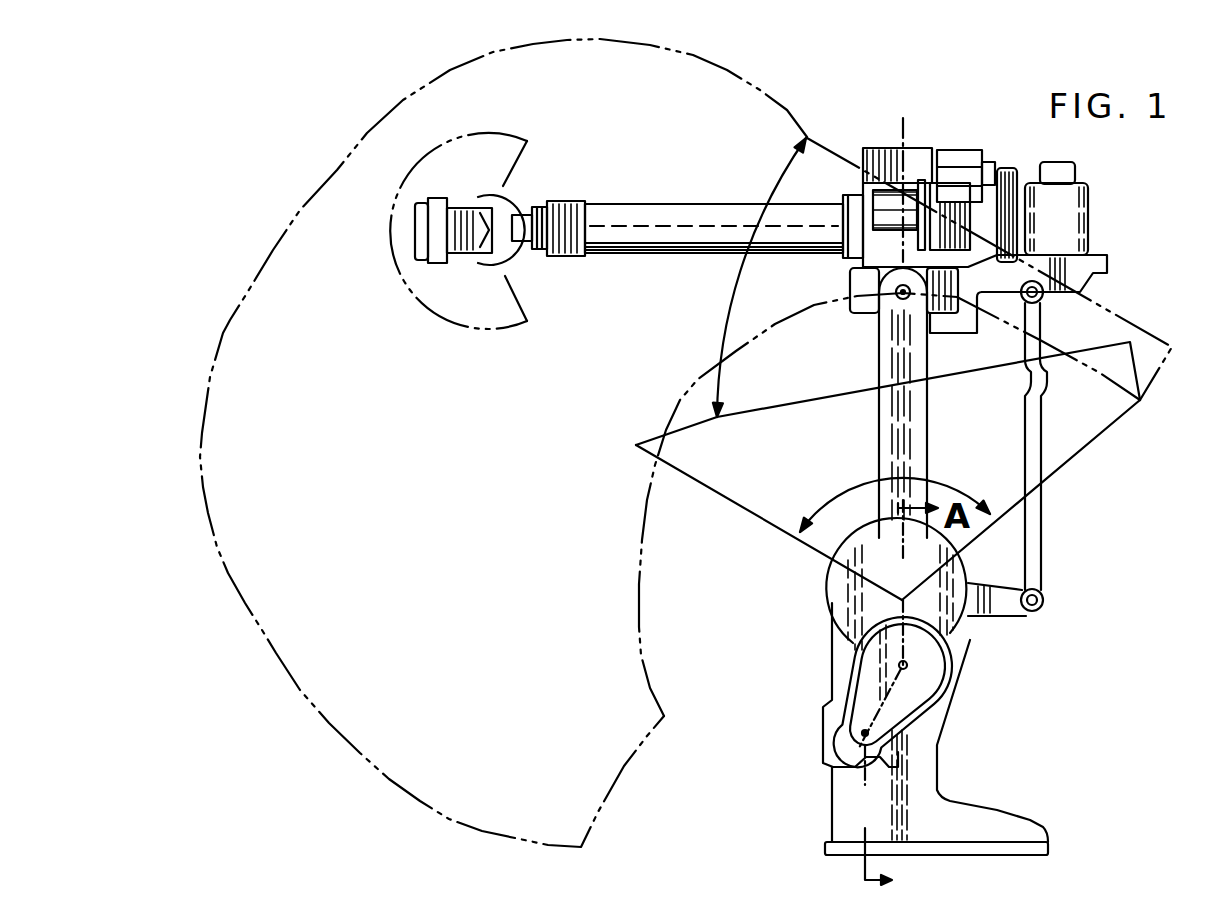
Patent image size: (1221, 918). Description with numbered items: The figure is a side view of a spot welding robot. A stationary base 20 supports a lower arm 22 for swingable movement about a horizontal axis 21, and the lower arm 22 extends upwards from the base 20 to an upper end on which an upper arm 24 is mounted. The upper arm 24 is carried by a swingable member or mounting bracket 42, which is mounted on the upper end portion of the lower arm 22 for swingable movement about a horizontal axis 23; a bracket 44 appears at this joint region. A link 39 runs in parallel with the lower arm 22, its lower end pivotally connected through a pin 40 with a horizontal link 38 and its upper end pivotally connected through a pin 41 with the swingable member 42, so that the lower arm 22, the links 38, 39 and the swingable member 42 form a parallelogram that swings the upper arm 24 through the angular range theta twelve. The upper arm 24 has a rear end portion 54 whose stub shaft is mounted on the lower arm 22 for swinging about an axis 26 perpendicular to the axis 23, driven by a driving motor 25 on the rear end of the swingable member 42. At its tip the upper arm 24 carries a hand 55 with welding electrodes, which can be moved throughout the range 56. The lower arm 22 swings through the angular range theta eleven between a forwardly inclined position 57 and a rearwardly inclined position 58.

The stationary base 20 is at (847, 800).
The horizontal axis 21 is at (835, 614).
The lower arm 22 is at (887, 430).
The horizontal axis 23 is at (888, 312).
The upper arm 24 is at (654, 217).
The driving motor 25 is at (1097, 218).
The axis 26 is at (913, 142).
The horizontal link 38 is at (1006, 615).
The link 39 is at (1044, 526).
The pin 40 is at (1046, 598).
The pin 41 is at (1046, 302).
The swingable member 42 is at (1088, 288).
The bracket 44 is at (852, 287).
The rear end portion 54 is at (880, 149).
The hand 55 is at (460, 255).
The range 56 is at (270, 652).
The forwardly inclined position 57 is at (750, 516).
The rearwardly inclined position 58 is at (1122, 432).